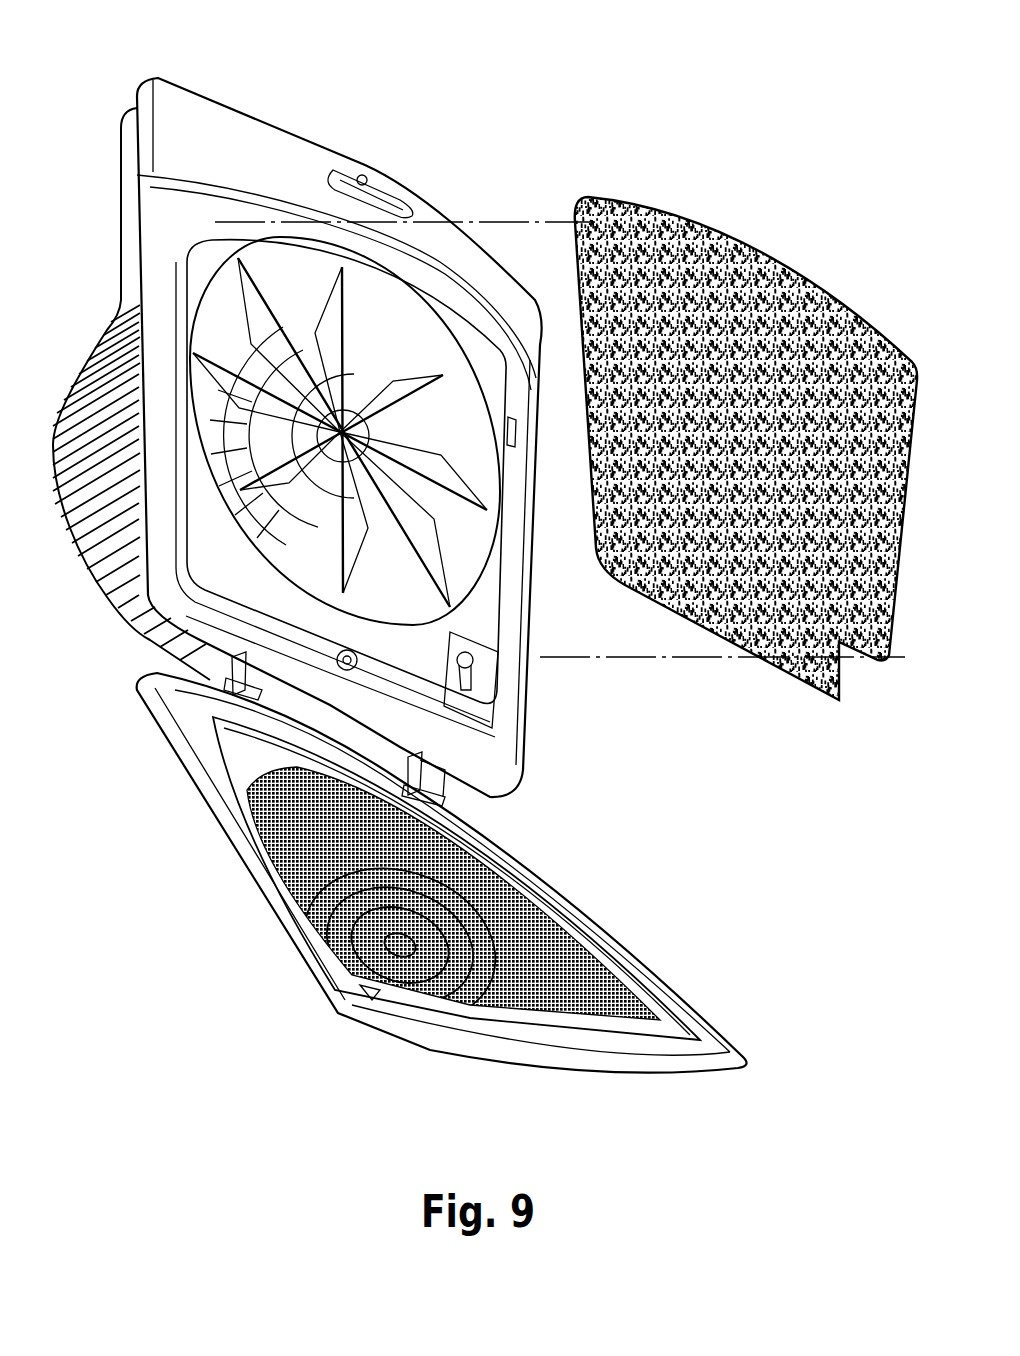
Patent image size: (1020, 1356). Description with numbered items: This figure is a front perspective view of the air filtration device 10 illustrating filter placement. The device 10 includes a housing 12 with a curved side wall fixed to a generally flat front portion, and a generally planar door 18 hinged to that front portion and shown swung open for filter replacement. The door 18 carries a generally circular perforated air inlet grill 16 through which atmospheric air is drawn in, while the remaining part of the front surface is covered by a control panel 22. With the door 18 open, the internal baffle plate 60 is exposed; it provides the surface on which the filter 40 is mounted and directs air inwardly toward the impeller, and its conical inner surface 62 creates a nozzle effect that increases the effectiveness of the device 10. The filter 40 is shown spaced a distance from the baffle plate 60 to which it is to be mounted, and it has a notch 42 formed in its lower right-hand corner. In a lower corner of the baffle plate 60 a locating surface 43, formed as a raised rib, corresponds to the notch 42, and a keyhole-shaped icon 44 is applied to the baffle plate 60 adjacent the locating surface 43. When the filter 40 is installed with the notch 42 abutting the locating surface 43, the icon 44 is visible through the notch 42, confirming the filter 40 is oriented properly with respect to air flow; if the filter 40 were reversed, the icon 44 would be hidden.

The air filtration device 10 is at (648, 138).
The housing 12 is at (256, 96).
The control panel 22 is at (310, 165).
The internal baffle plate 60 is at (200, 243).
The conical inner surface 62 is at (475, 550).
The icon 44 is at (476, 682).
The locating surface 43 is at (510, 758).
The door 18 is at (323, 968).
The air inlet grill 16 is at (412, 990).
The filter 40 is at (808, 305).
The notch 42 is at (851, 670).